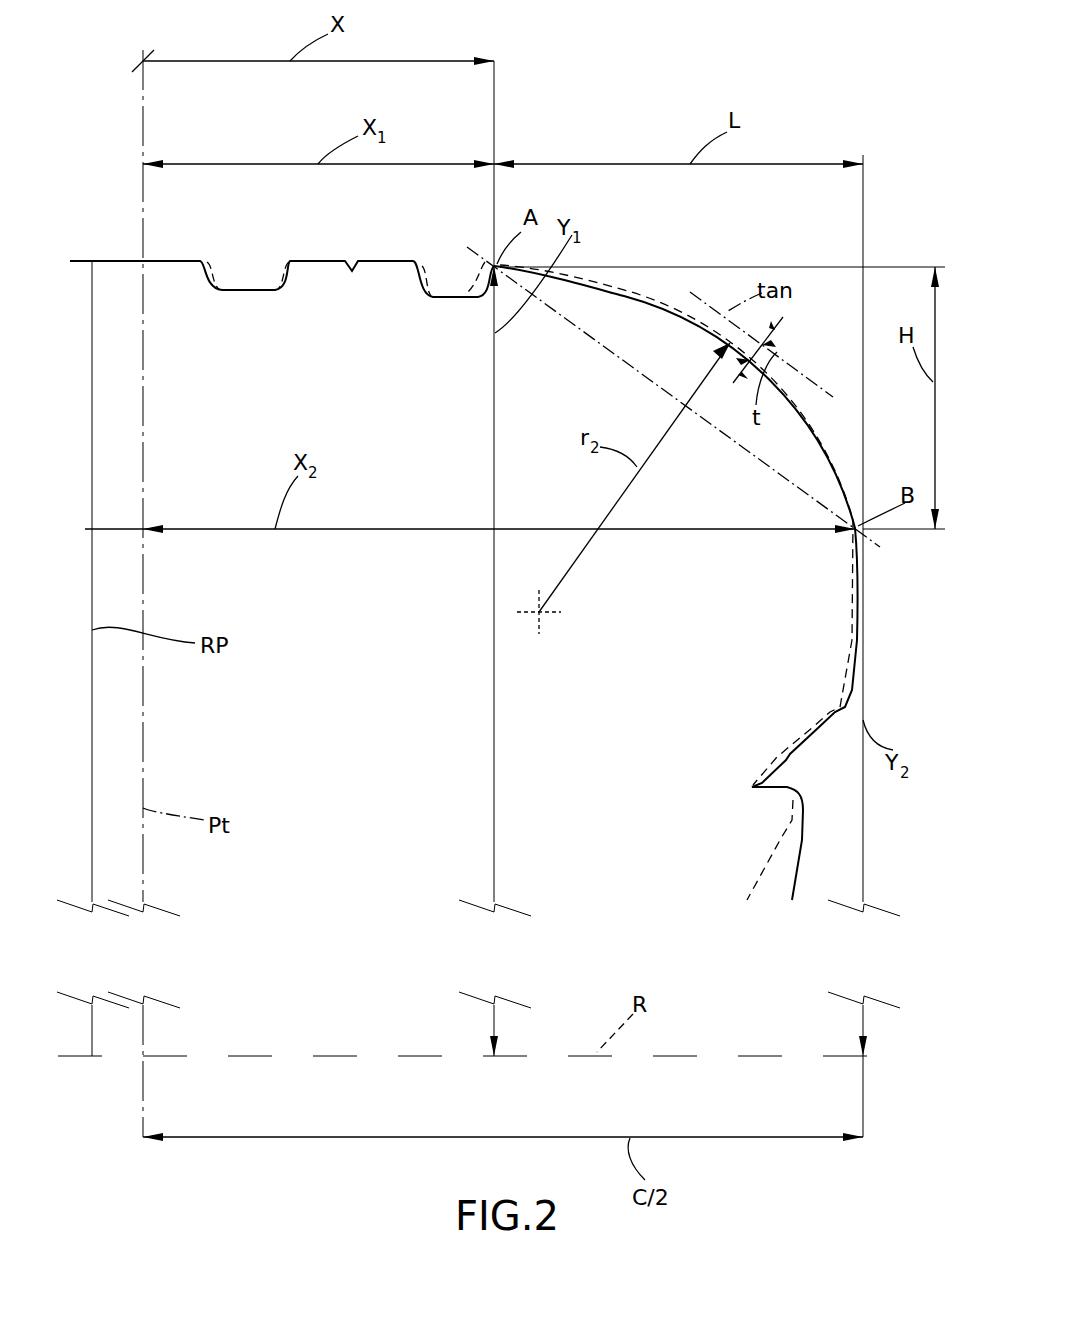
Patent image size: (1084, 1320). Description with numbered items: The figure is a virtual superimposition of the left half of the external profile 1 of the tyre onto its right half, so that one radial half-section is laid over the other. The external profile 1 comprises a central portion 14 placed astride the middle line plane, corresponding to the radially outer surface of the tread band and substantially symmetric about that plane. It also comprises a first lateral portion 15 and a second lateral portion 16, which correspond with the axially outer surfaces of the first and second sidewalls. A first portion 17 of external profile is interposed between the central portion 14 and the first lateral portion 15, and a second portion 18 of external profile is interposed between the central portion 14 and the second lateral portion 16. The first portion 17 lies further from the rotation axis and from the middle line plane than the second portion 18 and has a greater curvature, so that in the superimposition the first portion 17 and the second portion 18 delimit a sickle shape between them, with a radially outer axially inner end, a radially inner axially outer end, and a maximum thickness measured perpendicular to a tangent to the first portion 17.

The external profile 1 is at (618, 128).
The central portion 14 is at (172, 260).
The first lateral portion 15 is at (858, 556).
The second lateral portion 16 is at (866, 641).
The first portion of external profile 17 is at (677, 293).
The second portion of external profile 18 is at (790, 370).